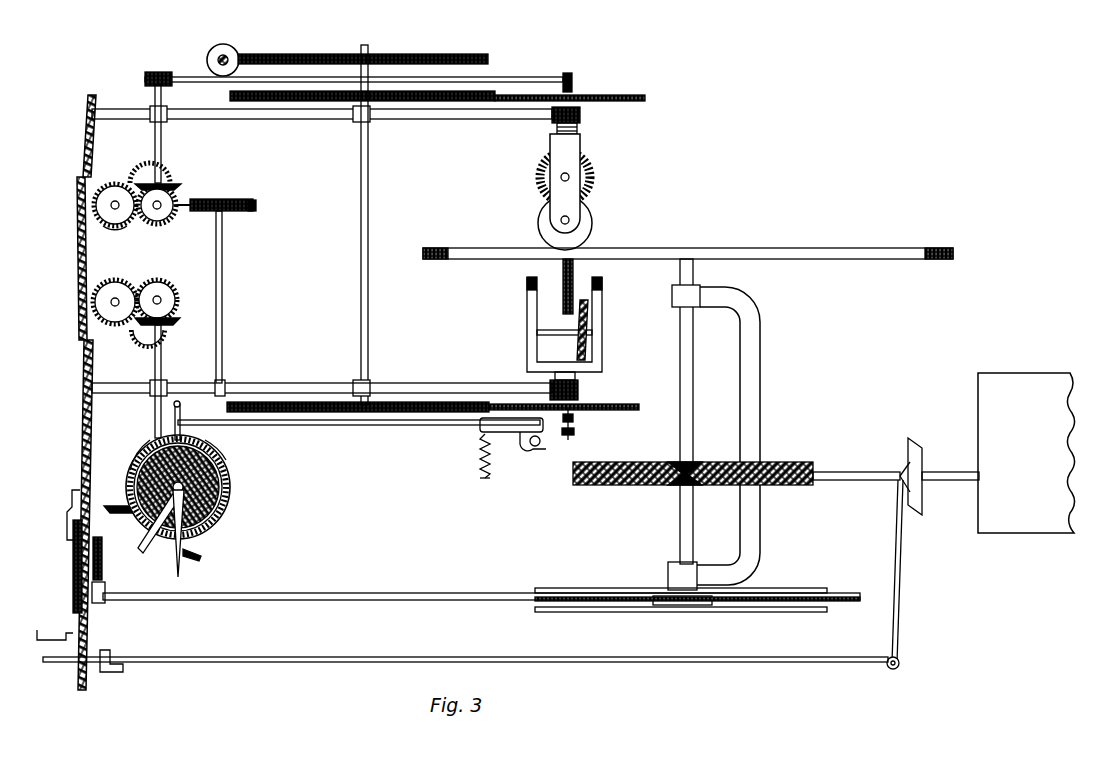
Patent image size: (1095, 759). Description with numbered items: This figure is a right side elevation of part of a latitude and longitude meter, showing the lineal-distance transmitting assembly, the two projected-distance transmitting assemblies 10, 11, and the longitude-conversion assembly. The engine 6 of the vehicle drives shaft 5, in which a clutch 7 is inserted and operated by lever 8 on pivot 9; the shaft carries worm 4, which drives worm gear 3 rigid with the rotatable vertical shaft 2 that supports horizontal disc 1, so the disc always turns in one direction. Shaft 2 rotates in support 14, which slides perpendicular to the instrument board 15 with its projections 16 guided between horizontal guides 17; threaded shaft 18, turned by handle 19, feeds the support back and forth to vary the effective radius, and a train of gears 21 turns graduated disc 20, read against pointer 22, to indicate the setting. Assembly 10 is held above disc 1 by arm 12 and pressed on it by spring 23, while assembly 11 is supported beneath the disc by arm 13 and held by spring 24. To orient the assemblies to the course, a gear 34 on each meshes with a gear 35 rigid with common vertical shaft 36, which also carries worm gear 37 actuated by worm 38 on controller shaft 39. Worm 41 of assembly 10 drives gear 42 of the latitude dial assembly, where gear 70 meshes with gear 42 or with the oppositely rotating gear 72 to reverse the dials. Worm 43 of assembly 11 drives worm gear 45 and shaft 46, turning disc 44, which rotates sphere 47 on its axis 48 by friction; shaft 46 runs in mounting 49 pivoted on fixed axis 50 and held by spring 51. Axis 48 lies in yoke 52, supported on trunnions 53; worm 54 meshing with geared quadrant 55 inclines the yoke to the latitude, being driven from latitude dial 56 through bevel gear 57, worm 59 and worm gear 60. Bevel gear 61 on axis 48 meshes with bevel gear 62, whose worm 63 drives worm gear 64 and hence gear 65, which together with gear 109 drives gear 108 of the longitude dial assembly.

The horizontal disc 1 is at (806, 250).
The rotatable vertical shaft 2 is at (695, 361).
The worm gear 3 is at (672, 487).
The worm 4 is at (685, 486).
The shaft 5 is at (852, 472).
The engine 6 is at (979, 393).
The clutch 7 is at (915, 508).
The lever 8 is at (45, 661).
The pivot 9 is at (112, 669).
The projected-distance transmitting assembly 10 is at (585, 149).
The projected-distance transmitting assembly 11 is at (528, 353).
The support arm 12 is at (479, 119).
The support arm 13 is at (430, 386).
The support 14 is at (756, 371).
The instrument board 15 is at (84, 412).
The projections 16 is at (684, 606).
The horizontal guides 17 is at (568, 589).
The threaded shaft 18 is at (337, 593).
The handle 19 is at (37, 632).
The disc 20 is at (73, 566).
The train of gears 21 is at (105, 567).
The pointer 22 is at (66, 528).
The spring 23 is at (551, 129).
The spring 24 is at (579, 381).
The gear 34 is at (639, 96).
The gear 35 is at (229, 96).
The vertical shaft 36 is at (370, 176).
The worm gear 37 is at (326, 54).
The worm 38 is at (231, 46).
The controller shaft 39 is at (216, 60).
The worm 41 is at (574, 83).
The gear 42 is at (172, 222).
The worm 43 is at (575, 421).
The disc 44 is at (182, 407).
The worm gear 45 is at (576, 433).
The shaft 46 is at (410, 428).
The sphere 47 is at (131, 467).
The axis 48 is at (216, 445).
The mounting 49 is at (513, 440).
The fixed axis 50 is at (542, 446).
The spring 51 is at (475, 463).
The yoke 52 is at (140, 551).
The trunnions 53 is at (228, 515).
The worm 54 is at (223, 477).
The geared quadrant 55 is at (219, 463).
The latitude dial 56 is at (124, 191).
The bevel gear 57 is at (148, 226).
The worm 59 is at (232, 198).
The worm gear 60 is at (258, 206).
The bevel gear 61 is at (203, 558).
The bevel gear 62 is at (229, 484).
The worm 63 is at (140, 445).
The worm gear 64 is at (128, 492).
The gear 65 is at (173, 284).
The gear 70 is at (115, 225).
The gear 72 is at (169, 176).
The gear 108 is at (110, 283).
The gear 109 is at (140, 348).